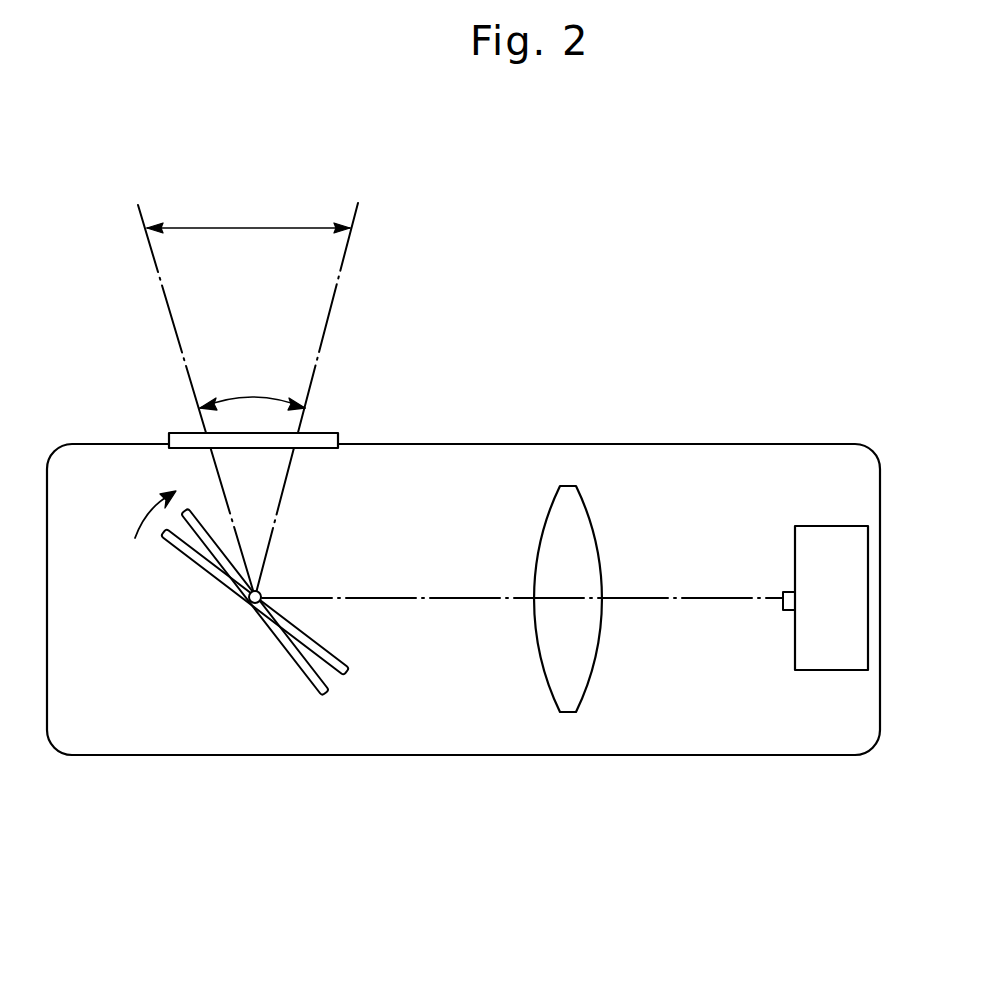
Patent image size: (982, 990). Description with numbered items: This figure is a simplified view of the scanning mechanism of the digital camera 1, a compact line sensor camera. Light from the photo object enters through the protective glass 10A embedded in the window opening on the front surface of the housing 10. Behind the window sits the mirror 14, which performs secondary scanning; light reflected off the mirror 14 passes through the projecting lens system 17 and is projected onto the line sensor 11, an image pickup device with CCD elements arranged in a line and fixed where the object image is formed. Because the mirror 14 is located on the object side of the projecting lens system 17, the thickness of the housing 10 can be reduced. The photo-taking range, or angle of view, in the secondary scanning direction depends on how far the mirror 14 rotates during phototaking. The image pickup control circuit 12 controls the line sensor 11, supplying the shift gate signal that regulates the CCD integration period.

The digital camera 1 is at (512, 310).
The housing 10 is at (435, 755).
The protective glass 10A is at (180, 432).
The line sensor 11 is at (787, 587).
The image pickup control circuit 12 is at (832, 526).
The mirror 14 is at (175, 555).
The projecting lens system 17 is at (548, 633).